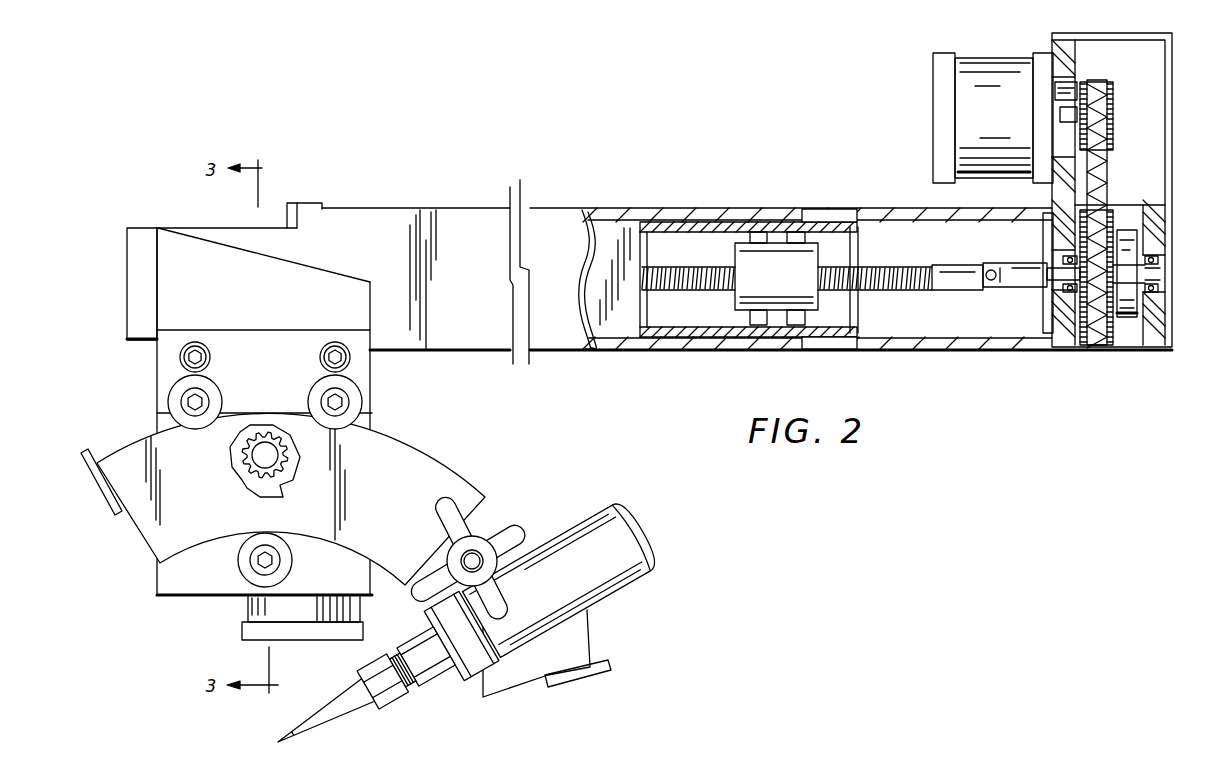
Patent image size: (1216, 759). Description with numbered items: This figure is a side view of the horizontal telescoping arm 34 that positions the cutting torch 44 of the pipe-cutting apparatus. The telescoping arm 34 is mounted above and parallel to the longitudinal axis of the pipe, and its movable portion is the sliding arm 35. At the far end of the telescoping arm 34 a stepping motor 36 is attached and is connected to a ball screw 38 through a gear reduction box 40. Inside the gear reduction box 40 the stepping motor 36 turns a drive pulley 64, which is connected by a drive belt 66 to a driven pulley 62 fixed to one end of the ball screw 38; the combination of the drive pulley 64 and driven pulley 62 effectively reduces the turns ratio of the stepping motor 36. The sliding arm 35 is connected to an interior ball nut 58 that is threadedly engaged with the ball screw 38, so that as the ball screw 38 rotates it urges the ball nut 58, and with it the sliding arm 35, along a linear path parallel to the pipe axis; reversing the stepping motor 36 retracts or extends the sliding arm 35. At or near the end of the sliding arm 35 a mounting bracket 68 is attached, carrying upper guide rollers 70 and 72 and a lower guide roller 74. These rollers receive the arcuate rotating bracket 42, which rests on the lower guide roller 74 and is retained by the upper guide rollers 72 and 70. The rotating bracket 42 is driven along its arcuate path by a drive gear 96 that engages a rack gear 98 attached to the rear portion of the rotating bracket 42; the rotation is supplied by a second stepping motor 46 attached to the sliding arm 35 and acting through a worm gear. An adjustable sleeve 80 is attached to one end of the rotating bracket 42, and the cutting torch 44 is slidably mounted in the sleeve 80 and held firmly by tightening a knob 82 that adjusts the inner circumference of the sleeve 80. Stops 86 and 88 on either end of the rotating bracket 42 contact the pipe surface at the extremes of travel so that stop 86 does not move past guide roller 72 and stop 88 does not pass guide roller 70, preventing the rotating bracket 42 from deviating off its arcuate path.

The horizontal telescoping arm 34 is at (577, 208).
The sliding arm 35 is at (242, 233).
The stepping motor 36 is at (989, 66).
The ball screw 38 is at (881, 267).
The gear reduction box 40 is at (1172, 138).
The rotating bracket 42 is at (458, 477).
The cutting torch 44 is at (612, 505).
The stepping motor 46 is at (250, 630).
The ball nut 58 is at (742, 251).
The driven pulley 62 is at (1115, 332).
The drive pulley 64 is at (1112, 88).
The drive belt 66 is at (1110, 182).
The mounting bracket 68 is at (170, 293).
The upper guide roller 70 is at (362, 402).
The upper guide roller 72 is at (170, 390).
The lower guide roller 74 is at (242, 575).
The adjustable sleeve 80 is at (562, 613).
The knob 82 is at (518, 528).
The stop 86 is at (104, 501).
The stop 88 is at (590, 673).
The drive gear 96 is at (250, 453).
The rack gear 98 is at (245, 487).